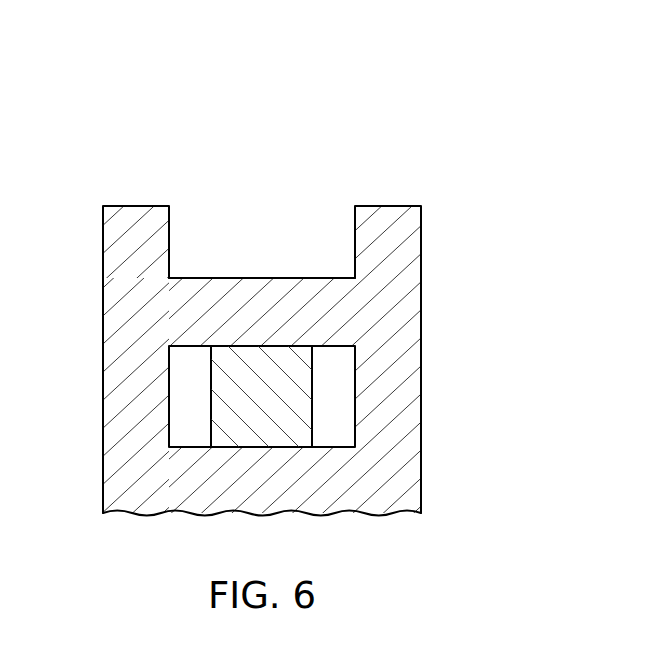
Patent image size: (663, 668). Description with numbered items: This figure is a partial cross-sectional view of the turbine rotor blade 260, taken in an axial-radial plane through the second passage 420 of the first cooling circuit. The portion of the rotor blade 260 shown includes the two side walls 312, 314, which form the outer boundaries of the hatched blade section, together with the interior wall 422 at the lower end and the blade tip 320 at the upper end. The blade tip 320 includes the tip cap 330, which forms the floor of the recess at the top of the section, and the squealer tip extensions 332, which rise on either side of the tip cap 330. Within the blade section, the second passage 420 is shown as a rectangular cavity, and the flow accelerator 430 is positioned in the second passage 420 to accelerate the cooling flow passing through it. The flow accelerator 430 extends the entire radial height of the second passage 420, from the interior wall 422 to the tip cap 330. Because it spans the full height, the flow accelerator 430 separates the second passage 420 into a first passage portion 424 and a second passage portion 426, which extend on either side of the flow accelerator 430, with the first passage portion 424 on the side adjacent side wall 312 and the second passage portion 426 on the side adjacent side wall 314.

The rotor blade 260 is at (181, 117).
The blade tip 320 is at (128, 192).
The squealer tip extensions 332 is at (110, 240).
The tip cap 330 is at (257, 287).
The side wall 312 is at (103, 385).
The side wall 314 is at (421, 385).
The interior wall 422 is at (333, 503).
The second passage 420 is at (181, 417).
The first passage portion 424 is at (177, 361).
The flow accelerator 430 is at (245, 438).
The second passage portion 426 is at (343, 408).